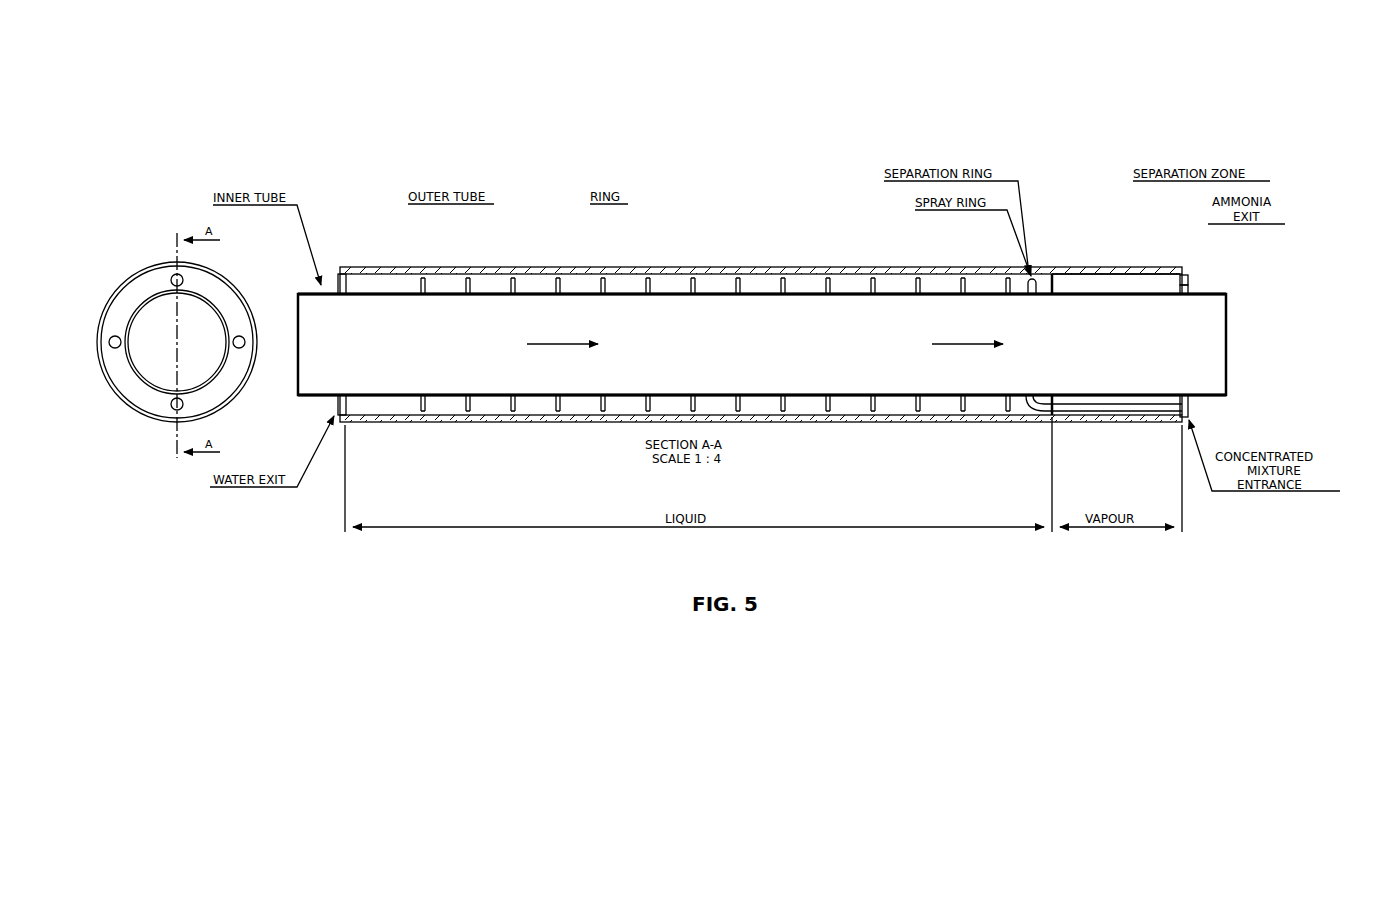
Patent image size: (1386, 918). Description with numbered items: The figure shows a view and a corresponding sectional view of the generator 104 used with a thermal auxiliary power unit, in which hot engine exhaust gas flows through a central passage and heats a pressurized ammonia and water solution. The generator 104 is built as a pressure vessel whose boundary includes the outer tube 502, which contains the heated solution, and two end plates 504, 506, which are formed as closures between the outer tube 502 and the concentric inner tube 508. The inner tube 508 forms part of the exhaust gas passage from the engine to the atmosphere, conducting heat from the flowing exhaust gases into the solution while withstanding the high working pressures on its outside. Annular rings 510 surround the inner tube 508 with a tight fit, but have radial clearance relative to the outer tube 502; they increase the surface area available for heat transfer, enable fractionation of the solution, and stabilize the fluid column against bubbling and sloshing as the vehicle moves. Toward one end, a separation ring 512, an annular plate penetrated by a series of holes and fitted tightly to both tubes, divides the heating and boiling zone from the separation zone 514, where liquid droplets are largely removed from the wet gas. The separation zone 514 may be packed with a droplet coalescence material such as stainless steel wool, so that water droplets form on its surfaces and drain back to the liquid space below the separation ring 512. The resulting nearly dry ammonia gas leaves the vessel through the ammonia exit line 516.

The generator 104 is at (372, 76).
The outer tube 502 is at (508, 270).
The end plate 504 is at (322, 284).
The end plate 506 is at (1190, 287).
The inner tube 508 is at (336, 275).
The annular rings 510 is at (644, 270).
The separation ring 512 is at (1049, 270).
The separation zone 514 is at (1102, 284).
The ammonia exit line 516 is at (1190, 274).